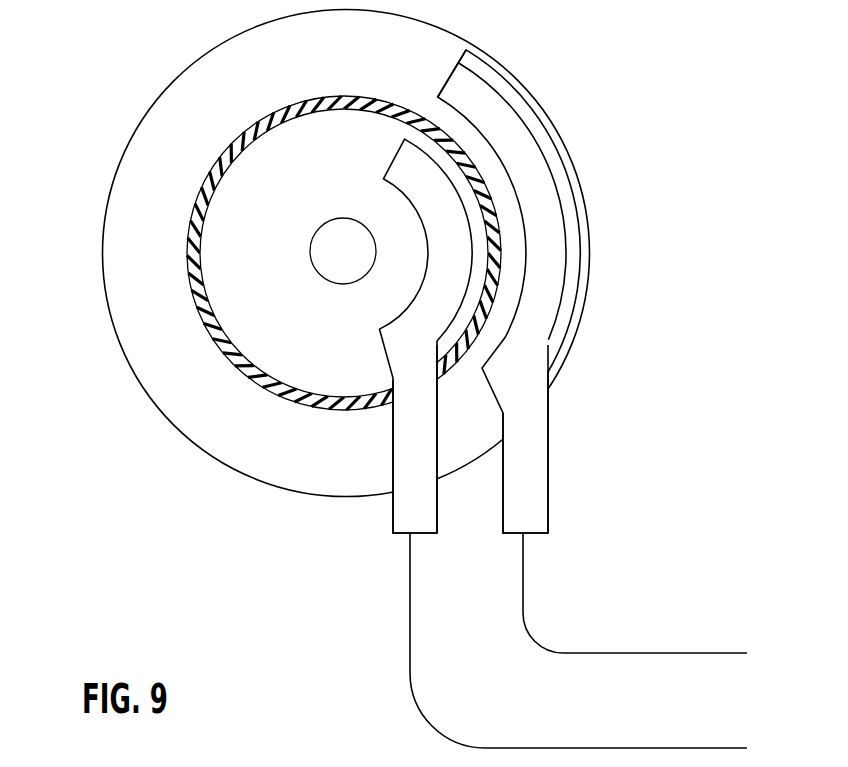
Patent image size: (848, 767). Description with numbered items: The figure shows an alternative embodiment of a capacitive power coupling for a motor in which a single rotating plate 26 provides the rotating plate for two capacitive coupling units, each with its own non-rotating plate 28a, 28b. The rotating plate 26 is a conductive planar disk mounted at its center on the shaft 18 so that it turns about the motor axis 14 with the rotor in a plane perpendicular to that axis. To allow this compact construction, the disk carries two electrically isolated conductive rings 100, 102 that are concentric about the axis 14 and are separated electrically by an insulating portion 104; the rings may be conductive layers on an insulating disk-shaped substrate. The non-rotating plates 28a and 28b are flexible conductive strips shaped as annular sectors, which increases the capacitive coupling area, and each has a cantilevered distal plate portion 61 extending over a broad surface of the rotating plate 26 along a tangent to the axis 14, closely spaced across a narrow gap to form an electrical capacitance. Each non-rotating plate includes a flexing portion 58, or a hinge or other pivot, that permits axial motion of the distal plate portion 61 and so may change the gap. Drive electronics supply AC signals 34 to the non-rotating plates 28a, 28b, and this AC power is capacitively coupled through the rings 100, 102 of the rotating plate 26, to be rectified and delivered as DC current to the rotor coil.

The motor axis 14 is at (196, 266).
The shaft 18 is at (338, 258).
The rotating plate 26 is at (468, 47).
The non-rotating plate 28a is at (420, 180).
The non-rotating plate 28b is at (530, 177).
The AC signals 34 is at (563, 652).
The flexing portion 58 is at (420, 448).
The distal plate portion 61 is at (415, 320).
The conductive ring 100 is at (187, 423).
The conductive ring 102 is at (290, 358).
The insulating portion 104 is at (213, 310).